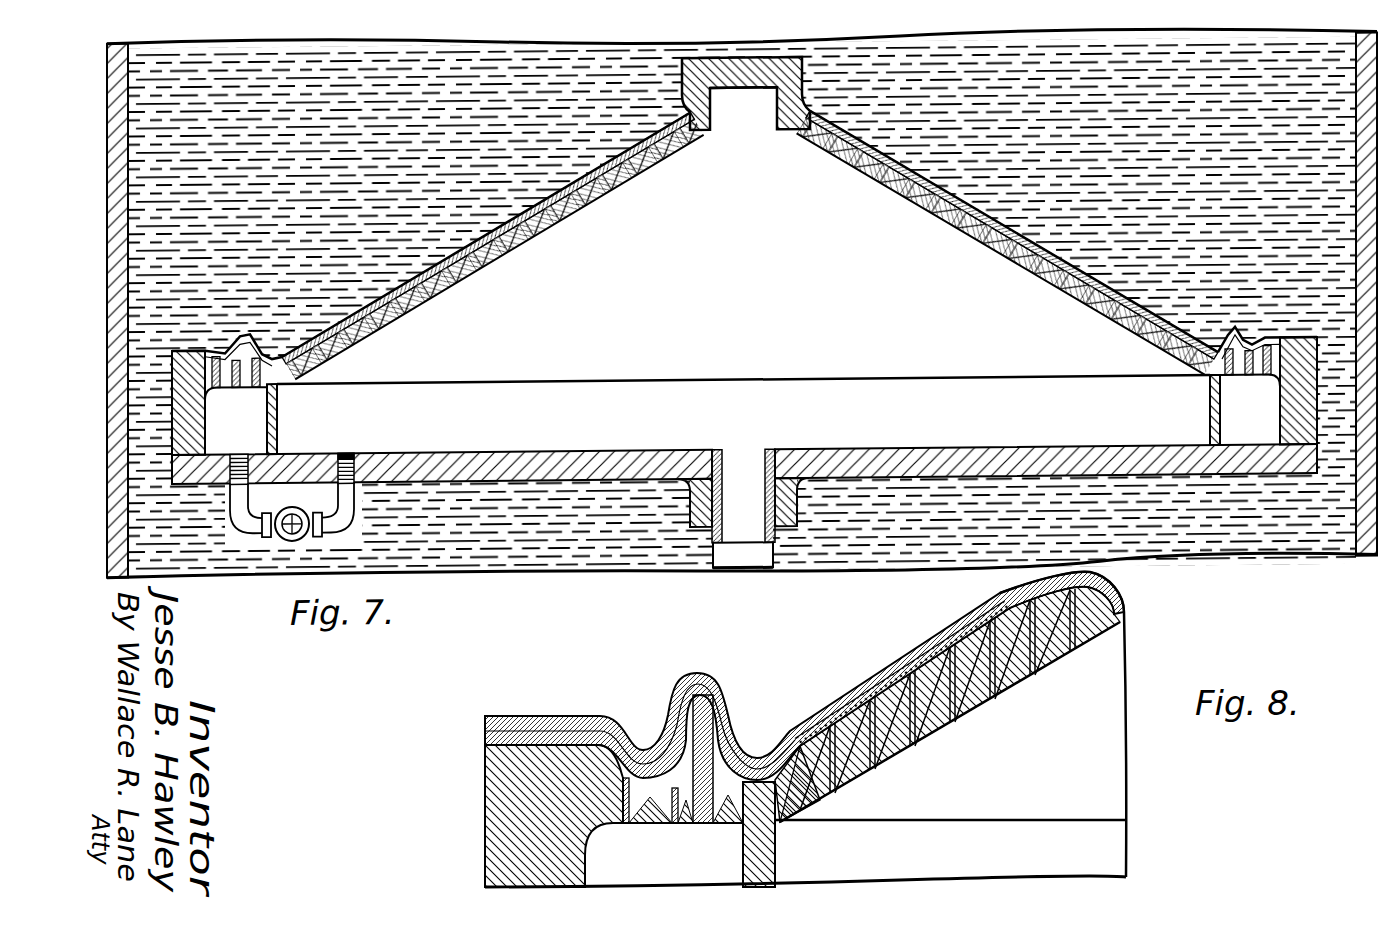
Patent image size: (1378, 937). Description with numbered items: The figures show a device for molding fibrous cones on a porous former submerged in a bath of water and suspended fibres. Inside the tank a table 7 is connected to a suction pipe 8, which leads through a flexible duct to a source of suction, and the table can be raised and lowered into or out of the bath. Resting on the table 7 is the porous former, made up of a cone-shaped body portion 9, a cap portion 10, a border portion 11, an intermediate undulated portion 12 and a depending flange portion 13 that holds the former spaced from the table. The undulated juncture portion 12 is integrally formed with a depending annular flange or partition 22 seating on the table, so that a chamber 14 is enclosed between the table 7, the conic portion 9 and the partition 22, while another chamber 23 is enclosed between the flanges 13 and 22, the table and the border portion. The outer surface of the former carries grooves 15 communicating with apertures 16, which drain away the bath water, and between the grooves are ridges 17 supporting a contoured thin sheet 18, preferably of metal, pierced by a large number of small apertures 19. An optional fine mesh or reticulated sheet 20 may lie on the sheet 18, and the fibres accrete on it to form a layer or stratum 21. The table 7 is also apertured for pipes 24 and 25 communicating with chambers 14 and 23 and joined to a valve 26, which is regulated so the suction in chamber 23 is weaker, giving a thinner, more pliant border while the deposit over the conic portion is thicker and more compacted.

In FIG. 7, the table 7 is at (1100, 450).
In FIG. 7, the suction pipe 8 is at (750, 543).
In FIG. 7, the cone-shaped body portion 9 is at (1000, 253).
In FIG. 8, the cone-shaped body portion 9 is at (1012, 692).
In FIG. 7, the cap portion 10 is at (734, 88).
In FIG. 7, the border portion 11 is at (1282, 425).
In FIG. 7, the intermediate undulated portion 12 is at (1240, 383).
In FIG. 7, the depending flange portion 13 is at (1307, 432).
In FIG. 8, the depending flange portion 13 is at (493, 866).
In FIG. 7, the chamber 14 is at (703, 384).
In FIG. 8, the chamber 14 is at (1095, 842).
In FIG. 7, the grooves 15 is at (498, 246).
In FIG. 8, the grooves 15 is at (842, 810).
In FIG. 8, the apertures 16 is at (694, 826).
In FIG. 8, the ridges 17 is at (936, 740).
In FIG. 7, the contoured thin sheet 18 is at (342, 357).
In FIG. 8, the contoured thin sheet 18 is at (1036, 678).
In FIG. 8, the small apertures 19 is at (1092, 628).
In FIG. 8, the reticulated sheet 20 is at (905, 661).
In FIG. 8, the layer or stratum 21 is at (930, 640).
In FIG. 7, the depending annular flange or partition 22 is at (280, 405).
In FIG. 8, the depending annular flange or partition 22 is at (780, 866).
In FIG. 7, the chamber 23 is at (222, 399).
In FIG. 8, the chamber 23 is at (678, 849).
In FIG. 7, the pipe 24 is at (344, 452).
In FIG. 7, the pipe 25 is at (237, 452).
In FIG. 7, the valve 26 is at (292, 540).